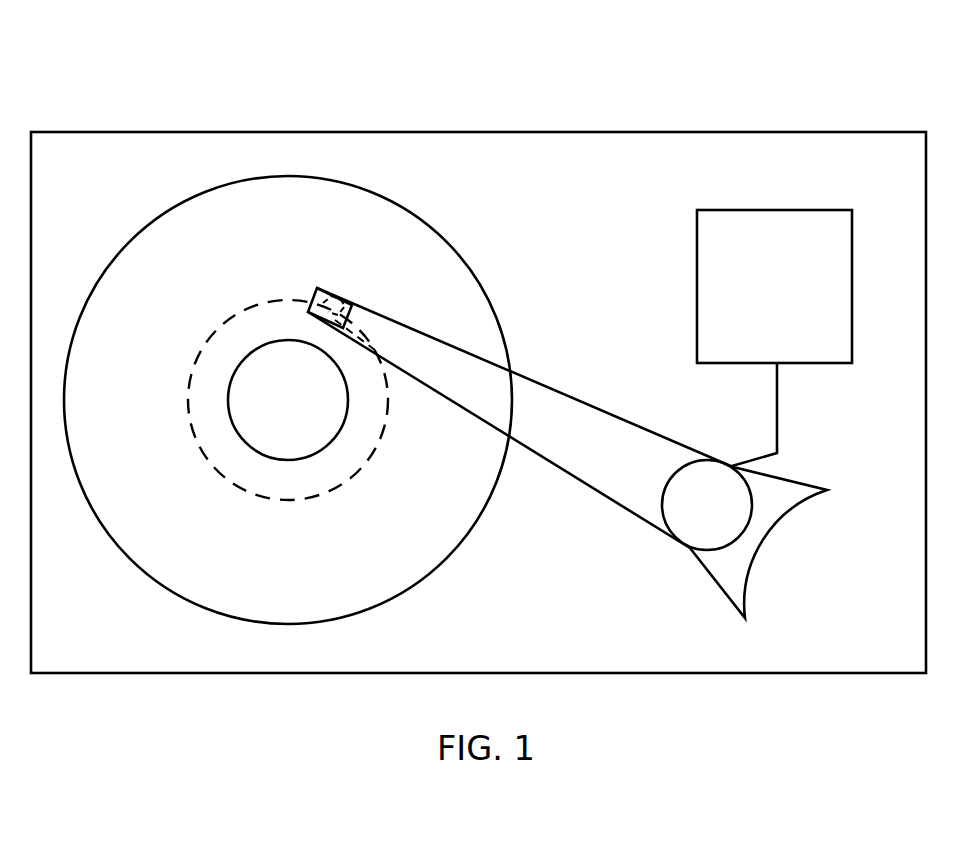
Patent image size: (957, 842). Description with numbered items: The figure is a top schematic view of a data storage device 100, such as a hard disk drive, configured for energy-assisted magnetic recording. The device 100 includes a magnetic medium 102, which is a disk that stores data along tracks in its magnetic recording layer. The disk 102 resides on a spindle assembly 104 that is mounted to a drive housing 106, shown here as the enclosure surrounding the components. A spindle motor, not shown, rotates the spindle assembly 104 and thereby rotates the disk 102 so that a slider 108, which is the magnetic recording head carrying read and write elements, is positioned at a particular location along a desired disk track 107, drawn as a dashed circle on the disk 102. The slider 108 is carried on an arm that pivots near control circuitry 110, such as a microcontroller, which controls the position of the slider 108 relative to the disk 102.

The data storage device 100 is at (236, 104).
The magnetic medium 102 is at (424, 217).
The spindle assembly 104 is at (309, 404).
The housing / enclosure 106 is at (627, 132).
The disk track 107 is at (262, 305).
The slider 108 is at (343, 308).
The control circuitry 110 is at (791, 301).